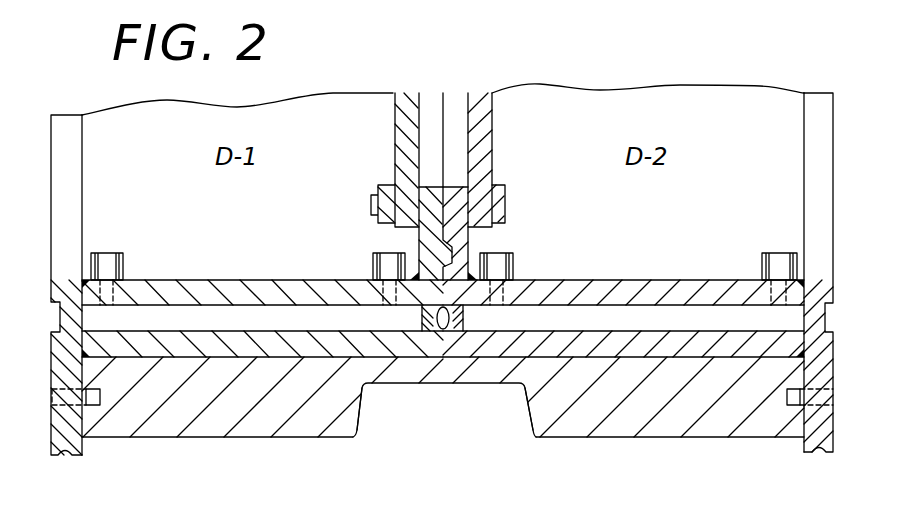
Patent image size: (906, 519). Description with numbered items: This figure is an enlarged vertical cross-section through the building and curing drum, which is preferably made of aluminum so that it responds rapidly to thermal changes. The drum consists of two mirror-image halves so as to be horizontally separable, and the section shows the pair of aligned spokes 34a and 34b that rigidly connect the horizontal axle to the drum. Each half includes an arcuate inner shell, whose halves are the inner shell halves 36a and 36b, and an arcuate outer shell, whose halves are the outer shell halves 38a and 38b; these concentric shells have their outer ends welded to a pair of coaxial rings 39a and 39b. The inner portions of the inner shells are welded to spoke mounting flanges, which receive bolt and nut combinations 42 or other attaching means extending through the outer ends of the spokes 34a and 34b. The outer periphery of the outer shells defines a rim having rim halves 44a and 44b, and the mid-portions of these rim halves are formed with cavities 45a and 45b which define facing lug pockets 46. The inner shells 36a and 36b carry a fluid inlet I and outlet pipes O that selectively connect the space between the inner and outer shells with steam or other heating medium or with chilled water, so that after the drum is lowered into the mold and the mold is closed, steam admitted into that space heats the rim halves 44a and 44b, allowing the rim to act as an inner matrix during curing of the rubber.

The spoke 34a is at (394, 112).
The spoke 34b is at (493, 112).
The inner shell half 36a is at (237, 280).
The inner shell half 36b is at (649, 280).
The outer shell half 38a is at (157, 331).
The outer shell half 38b is at (708, 331).
The coaxial ring 39a is at (55, 430).
The coaxial ring 39b is at (835, 432).
The bolt and nut combination 42 is at (505, 190).
The rim half 44a is at (220, 425).
The rim half 44b is at (652, 428).
The cavity 45a is at (363, 410).
The cavity 45b is at (535, 410).
The lug pocket 46 is at (447, 395).
The outlet pipe O is at (110, 253).
The fluid inlet I is at (374, 253).